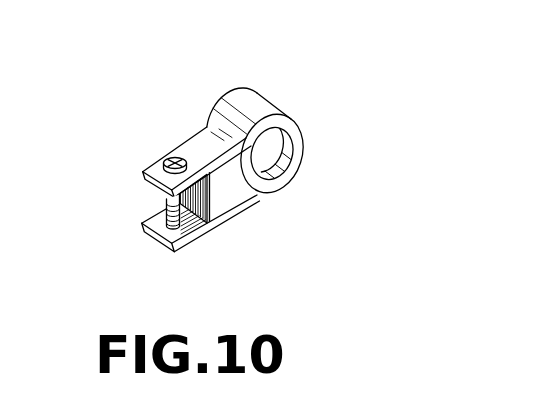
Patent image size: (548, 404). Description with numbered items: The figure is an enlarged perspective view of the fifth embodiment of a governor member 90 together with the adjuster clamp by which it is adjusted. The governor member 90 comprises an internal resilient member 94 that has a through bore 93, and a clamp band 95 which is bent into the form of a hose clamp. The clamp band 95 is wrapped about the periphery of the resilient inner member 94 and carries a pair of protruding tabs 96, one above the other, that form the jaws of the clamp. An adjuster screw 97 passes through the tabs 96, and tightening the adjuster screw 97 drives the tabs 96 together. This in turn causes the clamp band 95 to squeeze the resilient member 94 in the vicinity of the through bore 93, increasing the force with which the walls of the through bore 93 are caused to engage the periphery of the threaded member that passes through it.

The governor member 90 is at (216, 153).
The through bore 93 is at (276, 158).
The internal resilient member 94 is at (233, 185).
The clamp band 95 is at (224, 97).
The protruding tabs 96 is at (155, 160).
The adjuster screw 97 is at (164, 202).